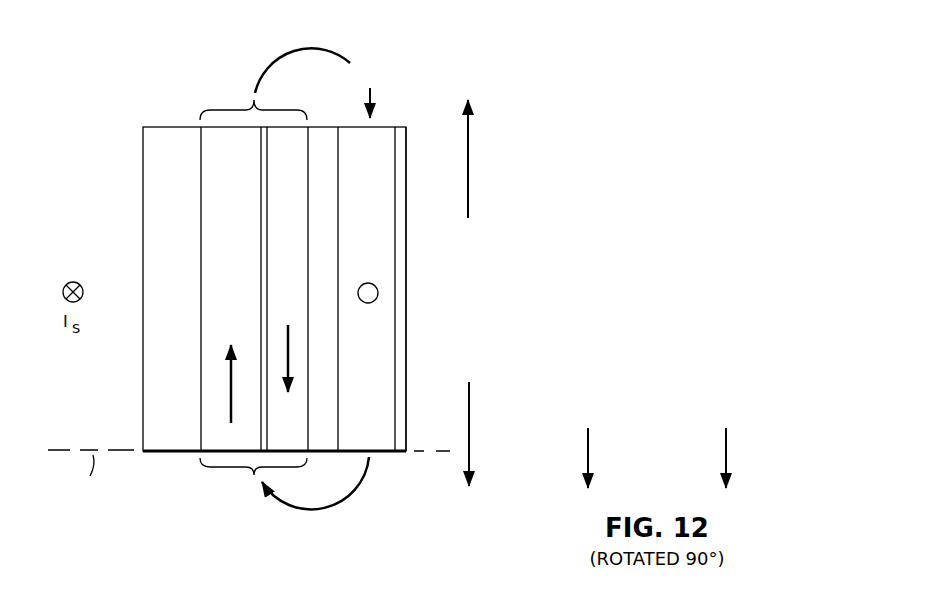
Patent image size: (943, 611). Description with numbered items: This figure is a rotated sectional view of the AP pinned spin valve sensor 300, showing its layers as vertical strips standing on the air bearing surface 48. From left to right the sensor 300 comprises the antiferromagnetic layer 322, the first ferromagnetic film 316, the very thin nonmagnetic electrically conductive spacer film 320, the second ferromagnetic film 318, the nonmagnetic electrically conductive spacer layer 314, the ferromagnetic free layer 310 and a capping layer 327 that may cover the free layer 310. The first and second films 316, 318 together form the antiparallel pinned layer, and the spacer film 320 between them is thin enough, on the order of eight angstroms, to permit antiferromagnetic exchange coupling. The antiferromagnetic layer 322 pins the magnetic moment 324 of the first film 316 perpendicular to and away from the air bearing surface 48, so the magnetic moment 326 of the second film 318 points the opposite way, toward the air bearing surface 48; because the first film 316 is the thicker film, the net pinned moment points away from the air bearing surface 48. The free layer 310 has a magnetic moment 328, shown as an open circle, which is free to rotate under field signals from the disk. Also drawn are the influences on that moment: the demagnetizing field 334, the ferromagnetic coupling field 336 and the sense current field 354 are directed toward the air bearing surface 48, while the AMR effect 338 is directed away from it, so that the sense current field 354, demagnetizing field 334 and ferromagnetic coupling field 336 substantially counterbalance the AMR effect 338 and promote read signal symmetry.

The sensor 300 is at (540, 90).
The ferromagnetic free layer 310 is at (377, 452).
The nonmagnetic electrically conductive spacer layer 314 is at (335, 341).
The first ferromagnetic film 316 is at (228, 452).
The second ferromagnetic film 318 is at (287, 452).
The nonmagnetic electrically conductive spacer film 320 is at (261, 150).
The antiferromagnetic layer 322 is at (167, 452).
The magnetic moment of the first film 324 is at (229, 397).
The magnetic moment of the second film 326 is at (290, 362).
The capping layer 327 is at (405, 256).
The magnetic moment of the free layer 328 is at (378, 296).
The demagnetizing field (Hdemag) 334 is at (292, 52).
The ferromagnetic coupling field (HFC) 336 is at (728, 455).
The AMR effect 338 is at (470, 163).
The sense current field (HSC) 354 is at (471, 440).
The air bearing surface (ABS) 48 is at (57, 455).